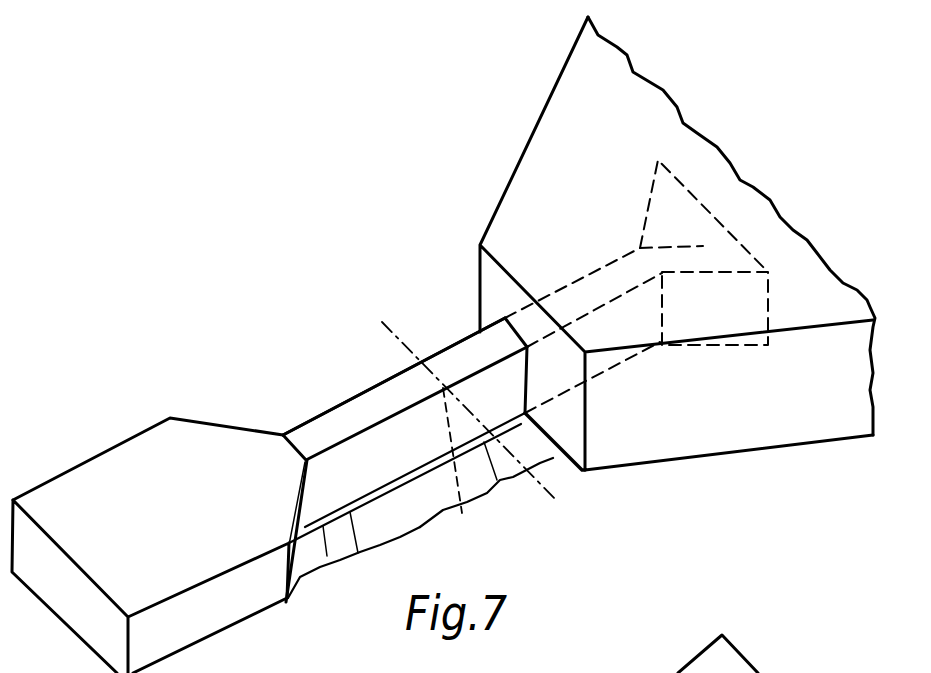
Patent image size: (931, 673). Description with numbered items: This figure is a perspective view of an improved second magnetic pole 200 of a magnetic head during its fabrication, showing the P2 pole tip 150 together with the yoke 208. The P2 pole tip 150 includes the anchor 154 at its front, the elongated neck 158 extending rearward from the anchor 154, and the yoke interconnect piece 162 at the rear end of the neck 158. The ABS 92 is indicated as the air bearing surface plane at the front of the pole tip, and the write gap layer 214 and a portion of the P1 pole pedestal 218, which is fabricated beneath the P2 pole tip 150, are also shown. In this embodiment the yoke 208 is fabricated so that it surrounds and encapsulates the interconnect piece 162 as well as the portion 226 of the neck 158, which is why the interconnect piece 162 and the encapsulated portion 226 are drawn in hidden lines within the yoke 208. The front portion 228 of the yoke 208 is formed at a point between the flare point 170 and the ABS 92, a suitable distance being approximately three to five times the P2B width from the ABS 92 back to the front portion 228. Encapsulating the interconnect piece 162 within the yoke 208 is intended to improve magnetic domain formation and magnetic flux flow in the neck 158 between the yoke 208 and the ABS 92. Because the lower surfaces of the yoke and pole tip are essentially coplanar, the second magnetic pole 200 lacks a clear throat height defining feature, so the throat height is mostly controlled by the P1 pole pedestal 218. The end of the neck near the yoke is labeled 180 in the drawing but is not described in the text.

The ABS 92 is at (393, 338).
The P2 pole tip 150 is at (234, 403).
The anchor 154 is at (195, 523).
The elongated neck 158 is at (378, 395).
The yoke interconnect piece 162 is at (704, 216).
The flare point 170 is at (663, 312).
The bar end 180 is at (506, 322).
The second magnetic pole 200 is at (406, 297).
The yoke 208 is at (547, 168).
The write gap layer 214 is at (320, 523).
The P1 pole pedestal 218 is at (418, 509).
The portion of the neck 226 is at (610, 280).
The front portion of the yoke 228 is at (572, 447).